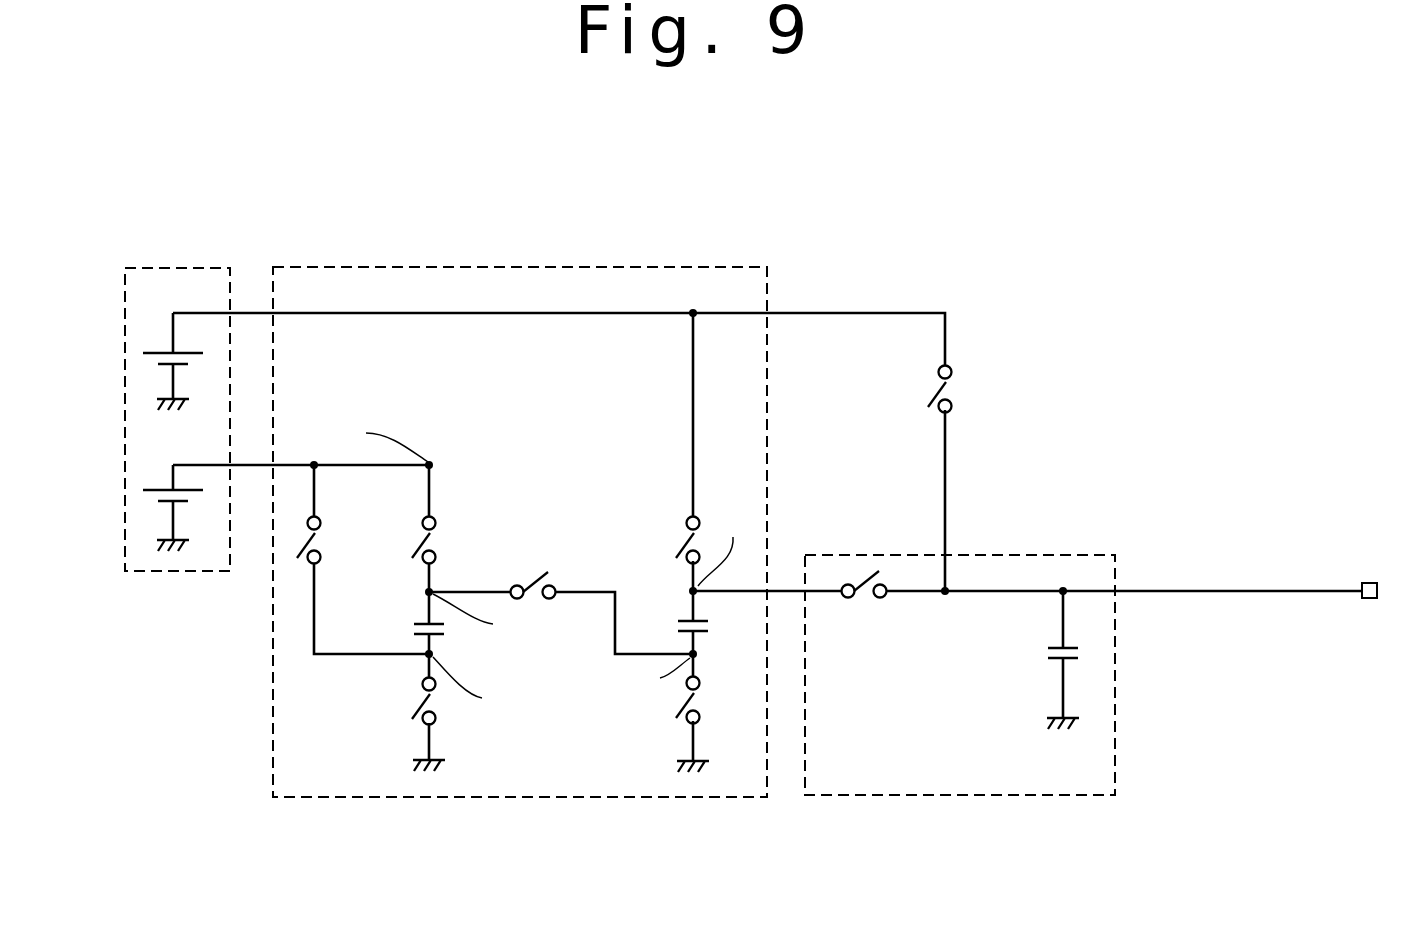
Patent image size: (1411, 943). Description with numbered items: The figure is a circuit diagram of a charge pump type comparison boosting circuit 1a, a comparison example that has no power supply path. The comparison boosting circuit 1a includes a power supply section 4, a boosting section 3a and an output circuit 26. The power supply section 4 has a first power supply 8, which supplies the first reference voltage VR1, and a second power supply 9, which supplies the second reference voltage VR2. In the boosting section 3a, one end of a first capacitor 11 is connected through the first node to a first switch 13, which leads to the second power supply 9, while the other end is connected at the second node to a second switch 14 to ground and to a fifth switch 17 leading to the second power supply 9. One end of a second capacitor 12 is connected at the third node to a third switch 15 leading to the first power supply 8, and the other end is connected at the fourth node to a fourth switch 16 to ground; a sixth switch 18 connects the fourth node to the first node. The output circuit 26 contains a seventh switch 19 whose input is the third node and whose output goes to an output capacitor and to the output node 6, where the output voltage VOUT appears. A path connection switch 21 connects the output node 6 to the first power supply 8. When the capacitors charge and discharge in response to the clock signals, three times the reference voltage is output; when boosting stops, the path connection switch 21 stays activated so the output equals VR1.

The charge pump type comparison boosting circuit 1a is at (927, 168).
The power supply section 4 is at (173, 268).
The boosting section 3a is at (578, 267).
The first power supply 8 is at (152, 356).
The second power supply 9 is at (155, 496).
The first capacitor 11 is at (427, 622).
The second capacitor 12 is at (684, 620).
The first switch 13 is at (440, 533).
The second switch 14 is at (428, 700).
The third switch 15 is at (686, 528).
The fourth switch 16 is at (682, 706).
The fifth switch 17 is at (325, 533).
The sixth switch 18 is at (541, 600).
The seventh switch 19 is at (866, 595).
The path connection switch 21 is at (950, 385).
The output circuit 26 is at (1035, 555).
The output node 6 is at (1370, 583).